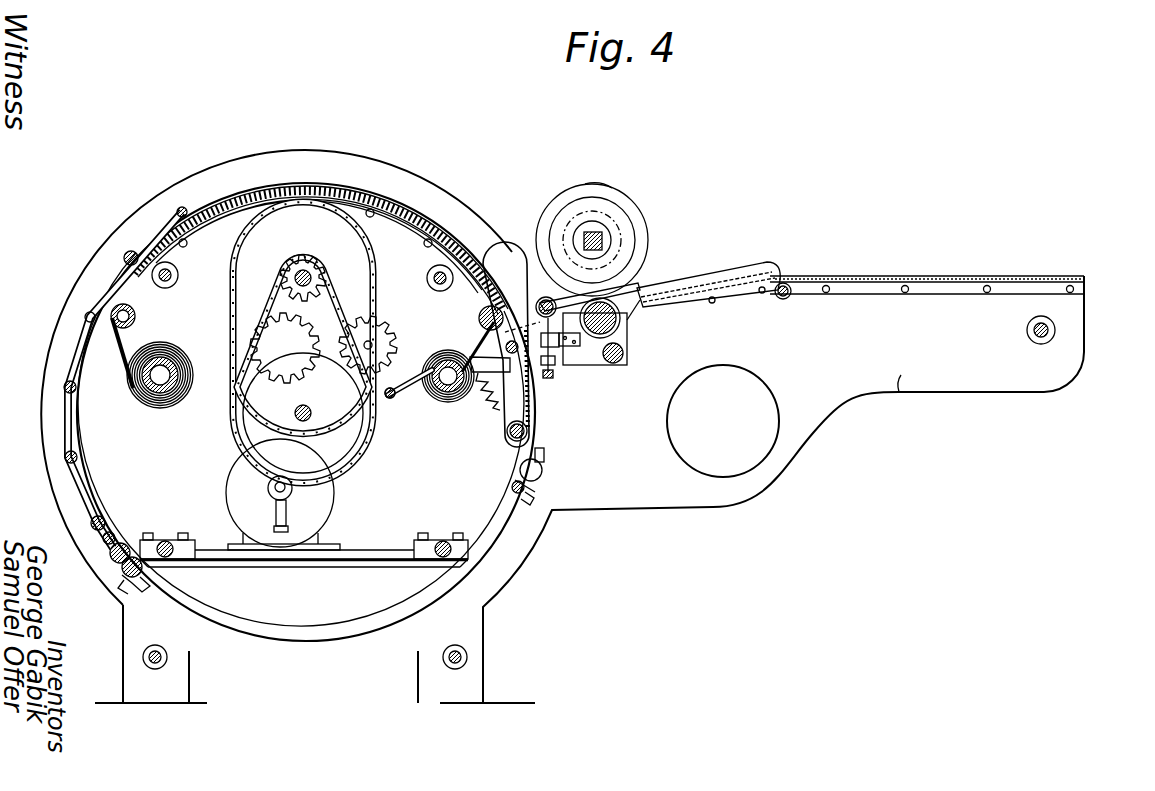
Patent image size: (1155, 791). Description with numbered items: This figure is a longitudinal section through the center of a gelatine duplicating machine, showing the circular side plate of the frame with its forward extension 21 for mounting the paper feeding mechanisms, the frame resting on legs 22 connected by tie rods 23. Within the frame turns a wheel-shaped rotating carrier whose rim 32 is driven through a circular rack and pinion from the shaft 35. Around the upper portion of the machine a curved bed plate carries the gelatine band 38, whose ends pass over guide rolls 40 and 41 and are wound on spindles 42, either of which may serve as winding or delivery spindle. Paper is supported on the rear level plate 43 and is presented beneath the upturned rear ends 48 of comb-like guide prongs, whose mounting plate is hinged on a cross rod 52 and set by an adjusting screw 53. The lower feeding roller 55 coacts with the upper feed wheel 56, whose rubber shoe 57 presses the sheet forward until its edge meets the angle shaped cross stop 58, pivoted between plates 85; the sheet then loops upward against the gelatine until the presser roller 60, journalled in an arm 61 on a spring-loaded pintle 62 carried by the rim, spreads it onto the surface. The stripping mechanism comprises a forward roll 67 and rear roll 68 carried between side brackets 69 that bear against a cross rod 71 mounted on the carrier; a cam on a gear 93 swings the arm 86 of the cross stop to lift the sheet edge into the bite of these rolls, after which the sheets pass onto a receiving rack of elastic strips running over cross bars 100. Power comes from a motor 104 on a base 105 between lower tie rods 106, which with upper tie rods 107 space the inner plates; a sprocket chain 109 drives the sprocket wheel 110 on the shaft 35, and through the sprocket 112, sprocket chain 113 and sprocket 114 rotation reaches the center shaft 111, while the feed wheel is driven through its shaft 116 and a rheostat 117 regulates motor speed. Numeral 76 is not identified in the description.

The forward extension 21 is at (900, 390).
The leg 22 is at (172, 690).
The tie rod 23 is at (470, 658).
The rim 32 is at (470, 560).
The shaft 35 is at (311, 276).
The gelatine band 38 is at (113, 352).
The guide roll 40 is at (478, 318).
The guide roll 41 is at (136, 318).
The spindle 42 is at (455, 398).
The rear level plate 43 is at (930, 276).
The upturned rear end 48 is at (617, 296).
The cross rod 52 is at (590, 368).
The adjusting screw 53 is at (551, 368).
The lower feeding roller 55 is at (625, 322).
The upper feed wheel 56 is at (648, 232).
The rubber shoe 57 is at (565, 200).
The angle shaped cross stop 58 is at (490, 400).
The presser roller 60 is at (512, 488).
The arm 61 is at (521, 470).
The pintle 62 is at (545, 456).
The forward roll 67 is at (127, 575).
The rear roll 68 is at (112, 560).
The side bracket 69 is at (146, 590).
The cross rod 71 is at (104, 541).
The toothed ring 76 is at (303, 641).
The plate 85 is at (530, 408).
The arm 86 is at (480, 357).
The gear 93 is at (389, 338).
The cross bar 100 is at (95, 520).
The motor 104 is at (228, 492).
The base 105 is at (350, 562).
The lower tie rod 106 is at (168, 558).
The upper tie rod 107 is at (428, 279).
The sprocket chain 109 is at (243, 333).
The sprocket wheel 110 is at (365, 266).
The center shaft 111 is at (312, 414).
The sprocket 112 is at (300, 262).
The sprocket chain 113 is at (254, 354).
The sprocket 114 is at (244, 432).
The shaft 116 is at (603, 250).
The rheostat 117 is at (765, 395).